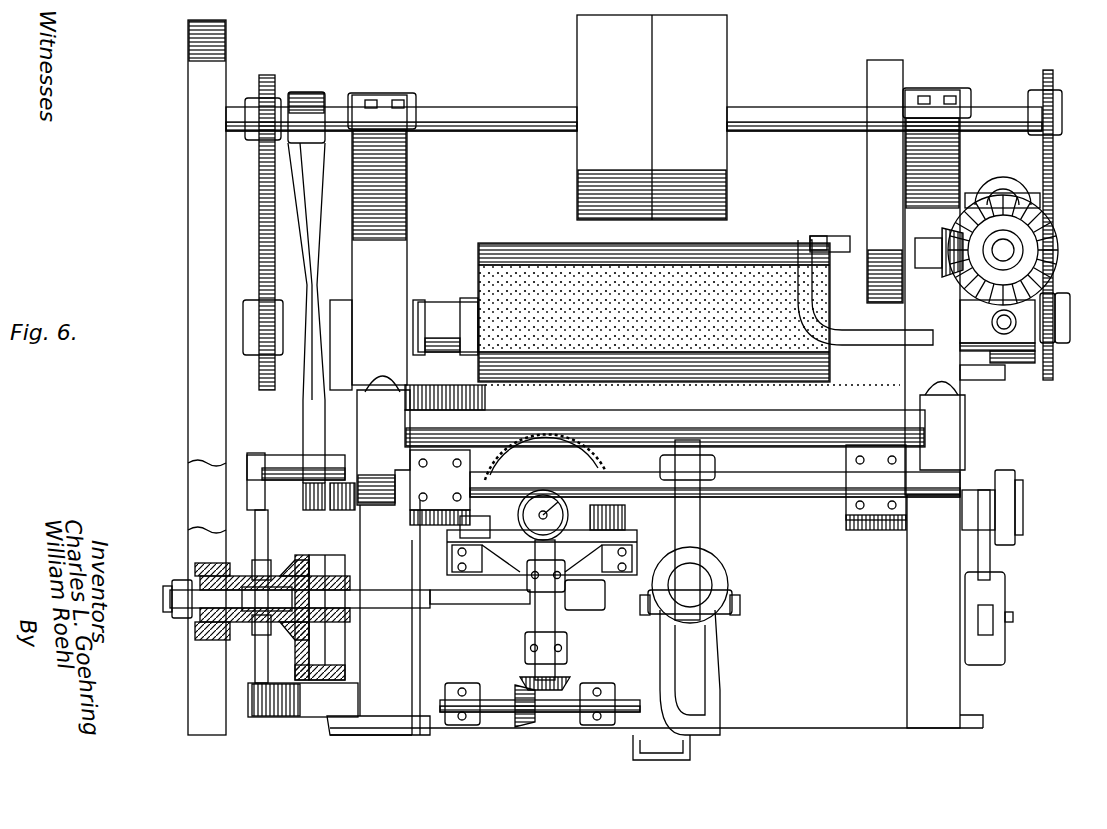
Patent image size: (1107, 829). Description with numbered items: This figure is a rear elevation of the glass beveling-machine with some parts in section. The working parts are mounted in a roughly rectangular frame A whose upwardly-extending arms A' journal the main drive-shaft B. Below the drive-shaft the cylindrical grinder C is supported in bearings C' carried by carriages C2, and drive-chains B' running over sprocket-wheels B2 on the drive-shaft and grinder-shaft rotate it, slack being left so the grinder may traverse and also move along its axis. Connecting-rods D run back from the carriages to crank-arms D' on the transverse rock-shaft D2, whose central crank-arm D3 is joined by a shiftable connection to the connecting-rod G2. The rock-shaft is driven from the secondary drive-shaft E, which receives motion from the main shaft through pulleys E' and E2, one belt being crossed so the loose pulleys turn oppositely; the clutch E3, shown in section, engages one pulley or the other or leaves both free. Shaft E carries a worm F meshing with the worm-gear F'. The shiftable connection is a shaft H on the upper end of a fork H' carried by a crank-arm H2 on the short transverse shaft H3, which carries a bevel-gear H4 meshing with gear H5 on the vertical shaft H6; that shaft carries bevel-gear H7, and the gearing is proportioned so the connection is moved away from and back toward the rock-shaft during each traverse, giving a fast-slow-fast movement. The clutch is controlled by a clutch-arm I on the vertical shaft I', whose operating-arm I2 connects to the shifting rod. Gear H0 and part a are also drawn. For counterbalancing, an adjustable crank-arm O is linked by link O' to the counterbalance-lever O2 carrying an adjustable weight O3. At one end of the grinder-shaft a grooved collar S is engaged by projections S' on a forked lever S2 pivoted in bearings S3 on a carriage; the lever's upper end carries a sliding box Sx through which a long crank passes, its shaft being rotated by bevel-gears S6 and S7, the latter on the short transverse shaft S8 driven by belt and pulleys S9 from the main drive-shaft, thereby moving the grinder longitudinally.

The frame A is at (585, 377).
The upwardly-extending arms A' is at (669, 272).
The main drive-shaft B is at (634, 117).
The drive-chains B' is at (664, 230).
The sprocket-wheels B2 is at (278, 85).
The grinder C is at (654, 312).
The bearings C' is at (445, 308).
The carriages C2 is at (345, 368).
The connecting-rods D is at (865, 309).
The crank-arms D' is at (677, 453).
The rock-shaft D2 is at (795, 495).
The central crank-arm D3 is at (700, 528).
The secondary drive-shaft E is at (279, 610).
The pulleys E' is at (336, 362).
The pulleys E2 is at (226, 72).
The clutch E3 is at (252, 630).
The worm F is at (542, 575).
The worm-gear F' is at (552, 457).
The connecting-rod G2 is at (715, 583).
The shaft H is at (697, 604).
The fork H' is at (707, 672).
The crank-arm H2 is at (658, 758).
The transverse shaft H3 is at (570, 712).
The bevel-gear H4 is at (522, 728).
The bevel-gear H5 is at (570, 682).
The vertical shaft H6 is at (565, 622).
The bevel-gear H7 is at (542, 552).
The gear H0 is at (555, 500).
The clutch-arm I is at (250, 616).
The vertical shaft I' is at (286, 622).
The operating-arm I2 is at (278, 462).
The crank-arm O is at (1004, 511).
The link O' is at (1015, 535).
The counterbalance-lever O2 is at (995, 628).
The adjustable weight O3 is at (990, 590).
The grooved collar S is at (1027, 365).
The projections S' is at (1008, 355).
The forked lever S2 is at (1057, 320).
The bearings S3 is at (960, 315).
The bevel-gear S6 is at (1013, 232).
The bevel-gear S7 is at (945, 232).
The transverse shaft S8 is at (862, 238).
The belt and pulleys S9 is at (870, 155).
The sliding box Sx is at (1032, 195).
The table beam a is at (665, 416).